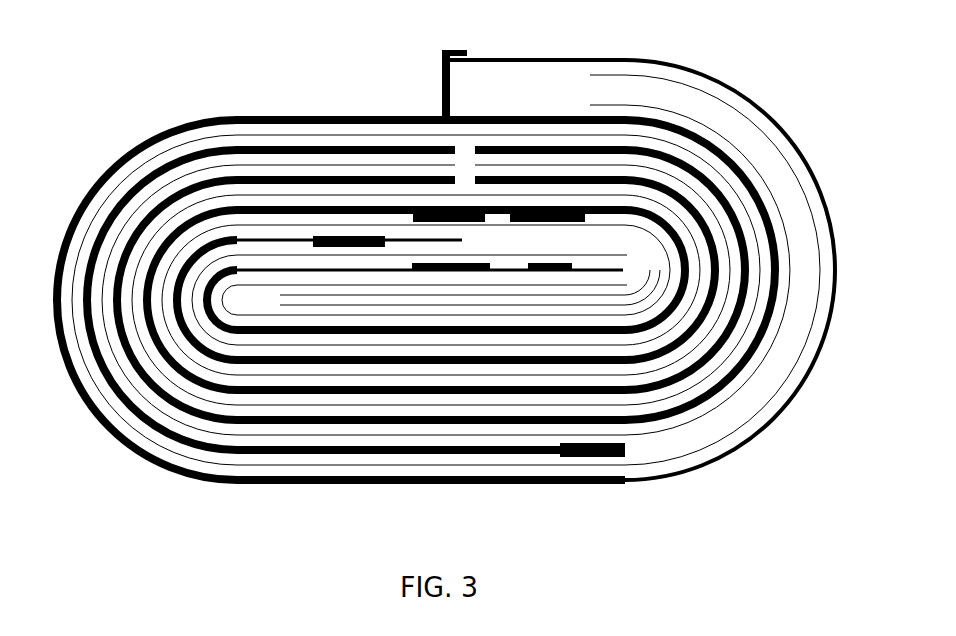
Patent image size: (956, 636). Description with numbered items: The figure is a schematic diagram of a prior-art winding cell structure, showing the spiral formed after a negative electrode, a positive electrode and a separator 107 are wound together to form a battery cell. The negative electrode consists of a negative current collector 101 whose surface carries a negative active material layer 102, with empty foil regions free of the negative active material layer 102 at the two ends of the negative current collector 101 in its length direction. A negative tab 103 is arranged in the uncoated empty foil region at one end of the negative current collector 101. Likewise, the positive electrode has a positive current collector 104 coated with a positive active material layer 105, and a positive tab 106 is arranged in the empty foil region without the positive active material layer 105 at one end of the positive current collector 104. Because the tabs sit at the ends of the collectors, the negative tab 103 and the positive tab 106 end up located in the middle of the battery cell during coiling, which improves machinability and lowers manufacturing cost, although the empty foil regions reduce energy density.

The negative current collector 101 is at (602, 270).
The negative active material layer 102 is at (487, 332).
The negative tab 103 is at (547, 270).
The positive current collector 104 is at (422, 240).
The positive active material layer 105 is at (150, 207).
The positive tab 106 is at (350, 237).
The separator 107 is at (230, 223).